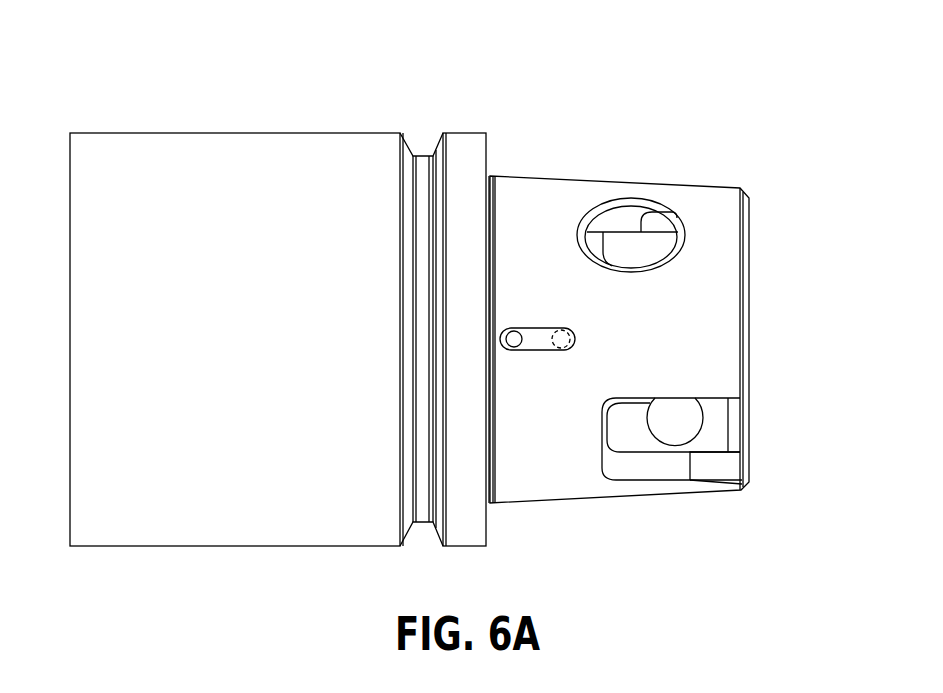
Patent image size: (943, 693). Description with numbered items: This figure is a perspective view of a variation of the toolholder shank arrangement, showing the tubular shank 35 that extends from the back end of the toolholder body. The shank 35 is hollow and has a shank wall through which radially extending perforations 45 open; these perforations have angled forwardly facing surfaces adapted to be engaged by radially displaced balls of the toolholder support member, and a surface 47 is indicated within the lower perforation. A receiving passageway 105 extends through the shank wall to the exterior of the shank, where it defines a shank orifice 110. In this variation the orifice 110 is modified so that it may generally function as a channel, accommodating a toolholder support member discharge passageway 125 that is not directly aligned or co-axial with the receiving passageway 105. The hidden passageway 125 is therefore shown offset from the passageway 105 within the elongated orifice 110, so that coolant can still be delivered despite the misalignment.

The tubular shank 35 is at (539, 197).
The radially extending perforations 45 is at (640, 197).
The flat surface of window 47 is at (720, 438).
The receiving passageway 105 is at (517, 331).
The shank orifice 110 is at (535, 328).
The discharge passageway 125 is at (562, 347).